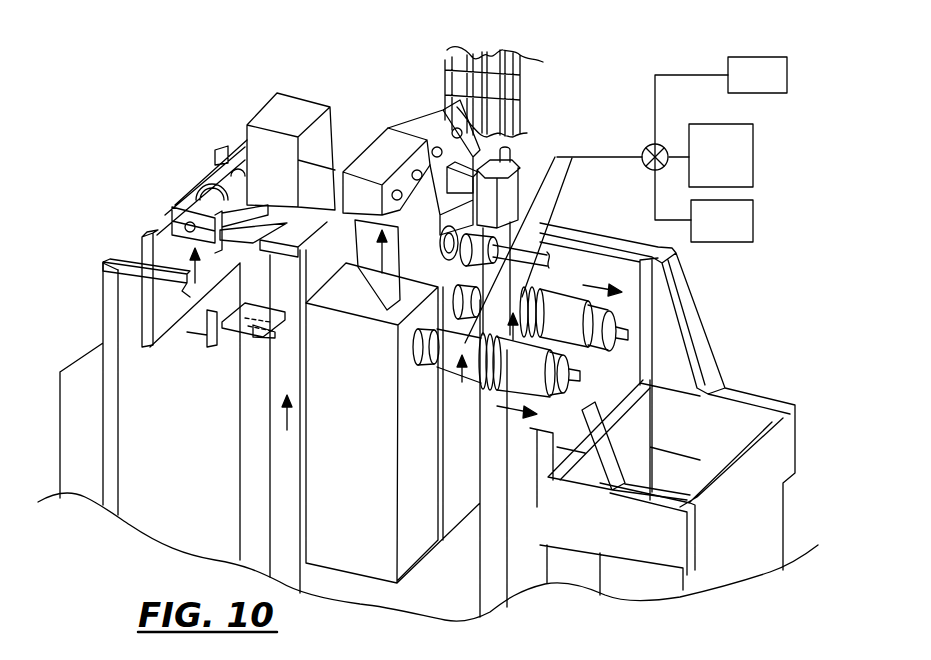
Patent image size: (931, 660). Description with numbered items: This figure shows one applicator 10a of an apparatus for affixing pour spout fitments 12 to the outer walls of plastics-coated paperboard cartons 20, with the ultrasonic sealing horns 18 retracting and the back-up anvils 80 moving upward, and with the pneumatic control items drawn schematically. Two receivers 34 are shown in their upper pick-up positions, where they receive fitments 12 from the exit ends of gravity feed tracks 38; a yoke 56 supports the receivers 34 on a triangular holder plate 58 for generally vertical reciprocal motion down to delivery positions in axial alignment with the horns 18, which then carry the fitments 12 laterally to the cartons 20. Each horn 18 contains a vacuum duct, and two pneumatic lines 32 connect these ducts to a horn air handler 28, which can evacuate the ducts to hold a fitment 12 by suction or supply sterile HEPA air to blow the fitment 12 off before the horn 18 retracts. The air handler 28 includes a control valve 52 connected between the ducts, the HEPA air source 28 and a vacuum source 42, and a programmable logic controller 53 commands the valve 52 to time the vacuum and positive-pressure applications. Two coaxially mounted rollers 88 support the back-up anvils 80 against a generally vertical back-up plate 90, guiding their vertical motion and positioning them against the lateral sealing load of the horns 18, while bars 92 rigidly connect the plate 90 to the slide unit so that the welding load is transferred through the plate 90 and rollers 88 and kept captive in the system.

The applicator 10a is at (766, 212).
The pour spout fitment 12 is at (508, 120).
The ultrasonic sealing horn 18 is at (462, 382).
The paperboard carton 20 is at (452, 503).
The horn air handler 28 is at (737, 163).
The pneumatic line 32 is at (543, 194).
The receiver 34 is at (445, 130).
The gravity feed track 38 is at (427, 68).
The vacuum source 42 is at (740, 222).
The control valve 52 is at (648, 168).
The programmable logic controller 53 is at (772, 80).
The yoke 56 is at (507, 160).
The triangular holder plate 58 is at (440, 213).
The back-up anvil 80 is at (375, 162).
The roller 88 is at (200, 193).
The back-up plate 90 is at (160, 242).
The bar 92 is at (147, 278).